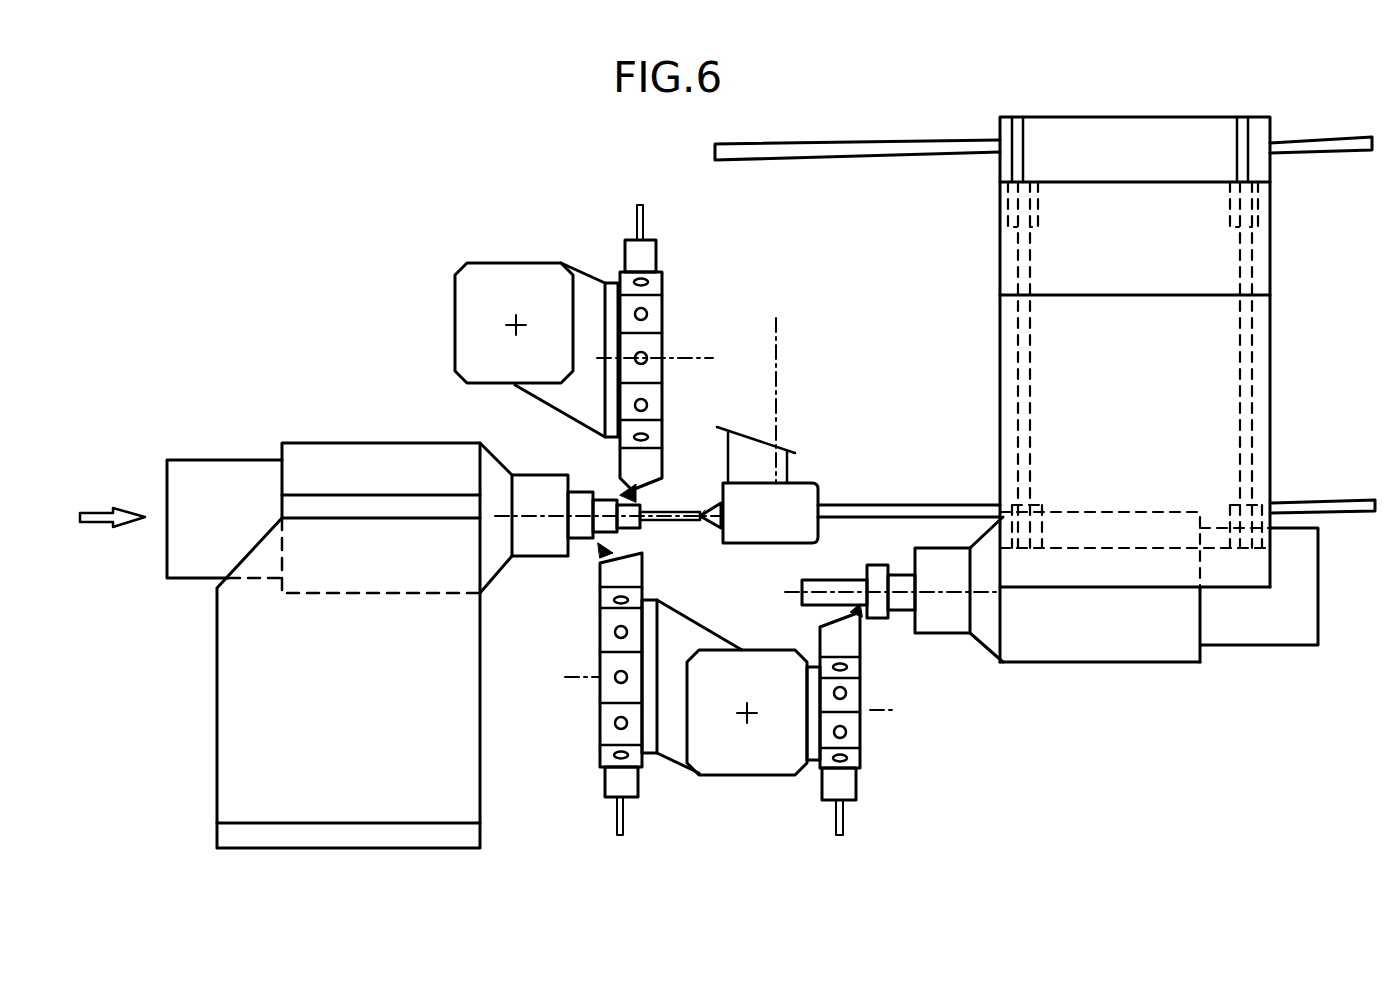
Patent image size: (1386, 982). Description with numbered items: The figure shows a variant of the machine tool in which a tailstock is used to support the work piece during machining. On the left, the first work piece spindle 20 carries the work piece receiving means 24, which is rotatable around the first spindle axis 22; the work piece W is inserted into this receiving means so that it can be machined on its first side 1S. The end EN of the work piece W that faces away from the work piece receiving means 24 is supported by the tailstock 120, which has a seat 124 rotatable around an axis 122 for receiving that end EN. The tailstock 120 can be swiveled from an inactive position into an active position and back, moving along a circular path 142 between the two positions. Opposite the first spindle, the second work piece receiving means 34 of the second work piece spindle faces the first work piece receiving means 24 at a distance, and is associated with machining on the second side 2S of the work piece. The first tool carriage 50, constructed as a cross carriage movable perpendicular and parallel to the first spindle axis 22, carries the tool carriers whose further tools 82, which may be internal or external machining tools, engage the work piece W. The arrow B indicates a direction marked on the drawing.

The first work piece spindle 20 is at (314, 460).
The first spindle axis 22 is at (498, 512).
The work piece receiving means 24 is at (530, 538).
The first side 1S is at (608, 492).
The work piece W is at (580, 538).
The end of the work piece EN is at (706, 490).
The seat 124 is at (710, 527).
The axis 122 is at (763, 515).
The tailstock 120 is at (800, 500).
The circular path 142 is at (777, 372).
The second side 2S is at (823, 585).
The second work piece receiving means 34 is at (945, 620).
The first tool carriage 50 is at (747, 762).
The further tools 82 is at (855, 782).
The feed direction B is at (110, 503).